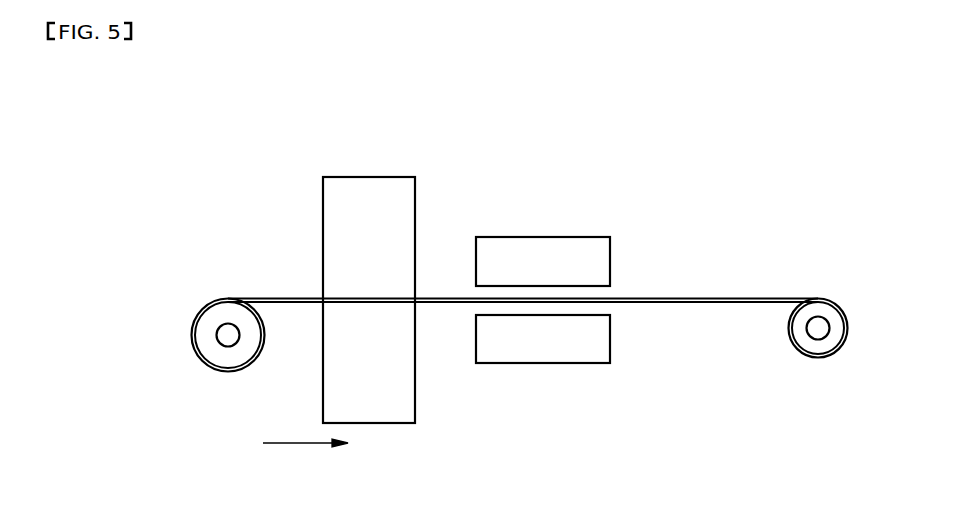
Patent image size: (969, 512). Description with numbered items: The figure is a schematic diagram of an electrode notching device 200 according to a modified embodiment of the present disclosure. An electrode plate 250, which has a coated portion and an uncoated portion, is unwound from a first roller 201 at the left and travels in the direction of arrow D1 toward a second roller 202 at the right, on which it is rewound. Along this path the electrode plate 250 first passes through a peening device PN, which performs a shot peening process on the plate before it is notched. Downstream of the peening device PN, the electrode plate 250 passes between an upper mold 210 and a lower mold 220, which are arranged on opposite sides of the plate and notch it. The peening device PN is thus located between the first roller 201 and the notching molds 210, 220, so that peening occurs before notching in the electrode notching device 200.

The electrode notching device 200 is at (259, 99).
The first roller 201 is at (228, 337).
The second roller 202 is at (818, 330).
The upper mold 210 is at (550, 236).
The lower mold 220 is at (543, 364).
The electrode plate 250 is at (724, 297).
The peening device PN is at (373, 176).
The arrow D1 is at (305, 458).